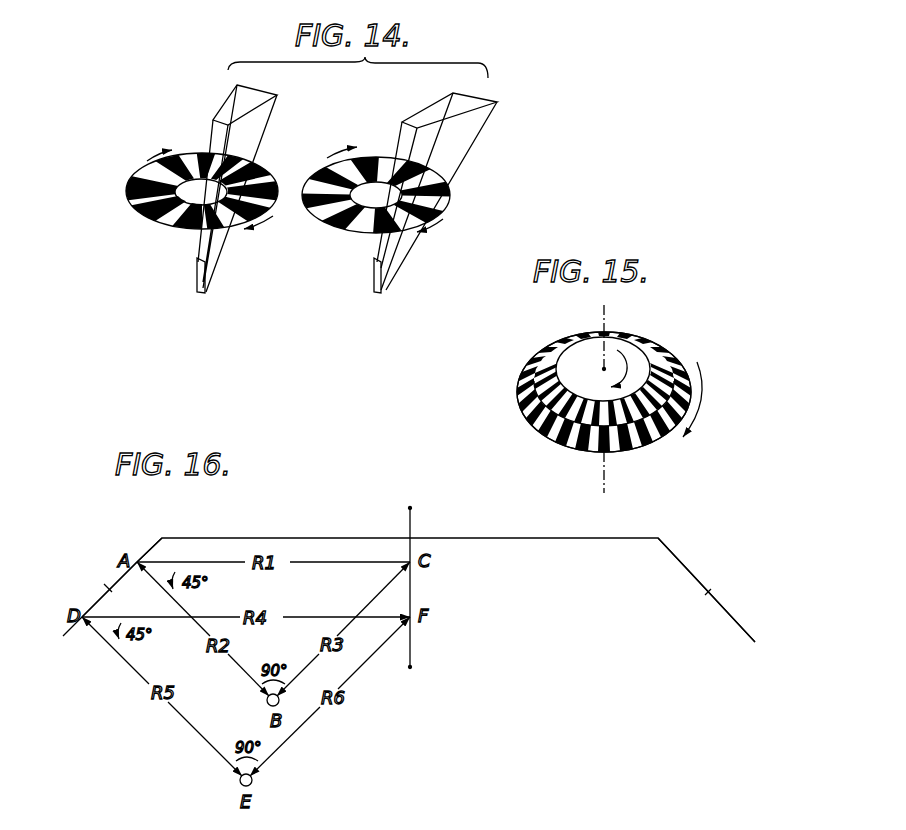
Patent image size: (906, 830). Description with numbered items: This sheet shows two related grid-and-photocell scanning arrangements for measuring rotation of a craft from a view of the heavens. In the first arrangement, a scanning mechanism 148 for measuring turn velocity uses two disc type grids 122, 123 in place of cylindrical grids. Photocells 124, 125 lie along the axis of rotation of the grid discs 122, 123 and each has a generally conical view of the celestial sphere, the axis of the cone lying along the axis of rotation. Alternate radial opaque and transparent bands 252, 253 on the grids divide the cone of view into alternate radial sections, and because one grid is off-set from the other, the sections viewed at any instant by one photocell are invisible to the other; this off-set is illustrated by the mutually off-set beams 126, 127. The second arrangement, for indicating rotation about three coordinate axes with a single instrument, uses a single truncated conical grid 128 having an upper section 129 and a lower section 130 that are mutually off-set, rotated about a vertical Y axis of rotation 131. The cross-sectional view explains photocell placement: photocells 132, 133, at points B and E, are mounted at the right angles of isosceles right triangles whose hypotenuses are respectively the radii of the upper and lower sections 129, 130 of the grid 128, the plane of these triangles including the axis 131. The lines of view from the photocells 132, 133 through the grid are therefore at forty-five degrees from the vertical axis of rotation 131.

In FIG. 14, the disc type grid 122 is at (128, 172).
In FIG. 14, the disc type grid 123 is at (452, 200).
In FIG. 14, the photocell 124 is at (196, 290).
In FIG. 14, the photocell 125 is at (374, 282).
In FIG. 14, the beam 126 is at (273, 93).
In FIG. 14, the beam 127 is at (490, 103).
In FIG. 14, the scanning mechanism 148 is at (176, 142).
In FIG. 14, the opaque band 252 is at (142, 212).
In FIG. 14, the transparent band 253 is at (178, 226).
In FIG. 15, the truncated conical grid 128 is at (512, 406).
In FIG. 16, the truncated conical grid 128 is at (700, 572).
In FIG. 15, the upper section 129 is at (537, 368).
In FIG. 16, the upper section 129 is at (119, 580).
In FIG. 15, the lower section 130 is at (568, 441).
In FIG. 16, the lower section 130 is at (101, 598).
In FIG. 15, the vertical Y axis of rotation 131 is at (608, 350).
In FIG. 16, the vertical Y axis of rotation 131 is at (411, 520).
In FIG. 16, the photocell 132 is at (268, 704).
In FIG. 16, the photocell 133 is at (253, 784).